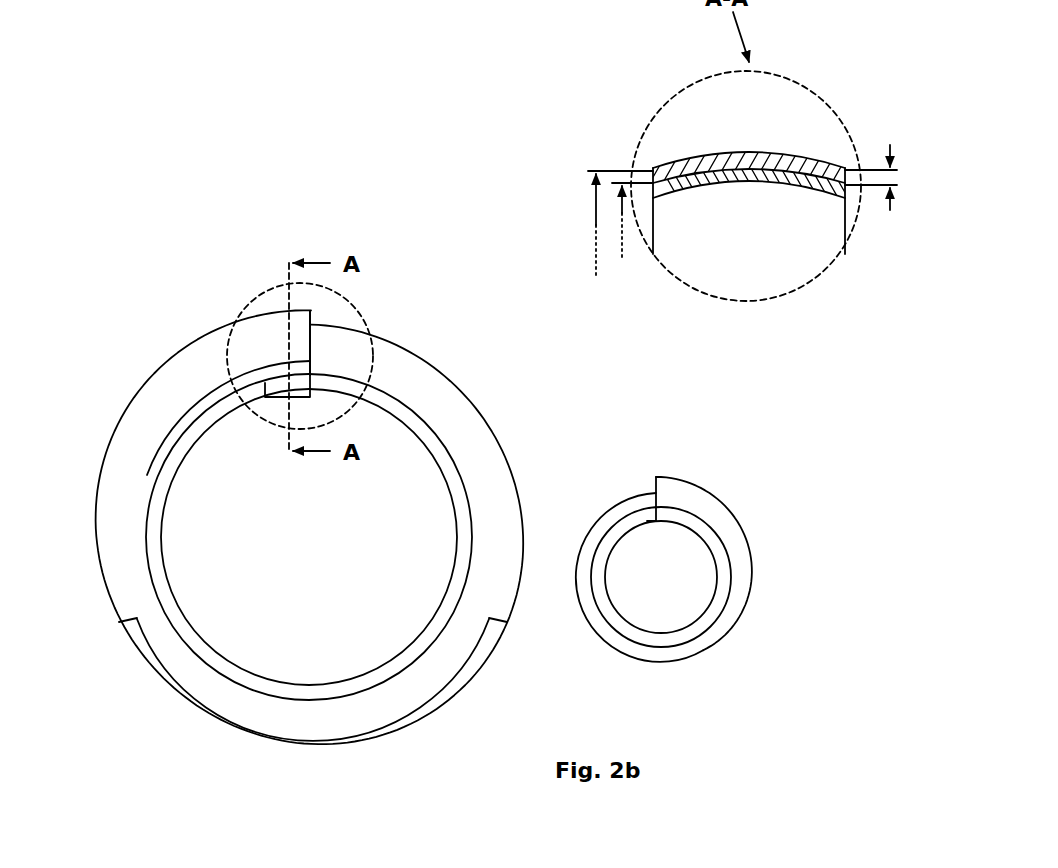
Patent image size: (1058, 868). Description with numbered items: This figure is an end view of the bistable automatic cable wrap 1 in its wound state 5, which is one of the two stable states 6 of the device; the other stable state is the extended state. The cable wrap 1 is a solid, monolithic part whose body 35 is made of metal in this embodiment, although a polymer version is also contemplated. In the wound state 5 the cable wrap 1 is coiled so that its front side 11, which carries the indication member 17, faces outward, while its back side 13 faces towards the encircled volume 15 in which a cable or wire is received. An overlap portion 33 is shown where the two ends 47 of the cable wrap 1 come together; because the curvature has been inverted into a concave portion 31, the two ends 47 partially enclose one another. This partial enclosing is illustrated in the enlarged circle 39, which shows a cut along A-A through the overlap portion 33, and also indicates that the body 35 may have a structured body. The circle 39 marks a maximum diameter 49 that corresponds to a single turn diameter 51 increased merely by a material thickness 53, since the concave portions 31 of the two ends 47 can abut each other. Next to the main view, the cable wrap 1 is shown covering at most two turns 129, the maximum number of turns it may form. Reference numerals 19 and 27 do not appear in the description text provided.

The cable wrap 1 is at (385, 302).
The wound state 5 is at (385, 302).
The stable state 6 is at (405, 282).
The front side 11 is at (310, 525).
The back side 13 is at (455, 511).
The encircled volume 15 is at (346, 645).
The indication member 17 is at (276, 665).
The outer surface 19 is at (457, 395).
The ring segment 27 is at (217, 390).
The concave portion 31 is at (742, 190).
The overlap portion 33 is at (265, 292).
The body 35 is at (112, 575).
The circle 39 is at (669, 90).
The ends 47 is at (264, 396).
The maximum diameter 49 is at (596, 190).
The single turn diameter 51 is at (622, 212).
The material thickness 53 is at (892, 200).
The two turns 129 is at (693, 484).